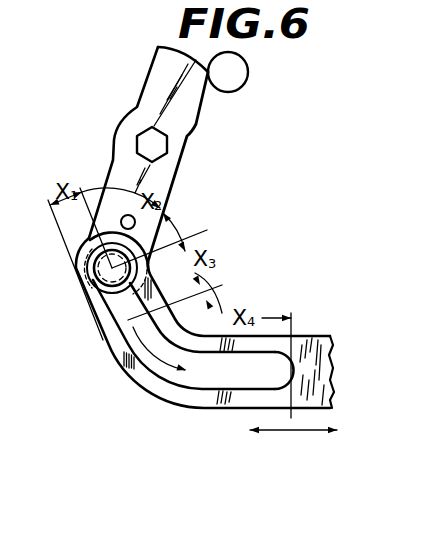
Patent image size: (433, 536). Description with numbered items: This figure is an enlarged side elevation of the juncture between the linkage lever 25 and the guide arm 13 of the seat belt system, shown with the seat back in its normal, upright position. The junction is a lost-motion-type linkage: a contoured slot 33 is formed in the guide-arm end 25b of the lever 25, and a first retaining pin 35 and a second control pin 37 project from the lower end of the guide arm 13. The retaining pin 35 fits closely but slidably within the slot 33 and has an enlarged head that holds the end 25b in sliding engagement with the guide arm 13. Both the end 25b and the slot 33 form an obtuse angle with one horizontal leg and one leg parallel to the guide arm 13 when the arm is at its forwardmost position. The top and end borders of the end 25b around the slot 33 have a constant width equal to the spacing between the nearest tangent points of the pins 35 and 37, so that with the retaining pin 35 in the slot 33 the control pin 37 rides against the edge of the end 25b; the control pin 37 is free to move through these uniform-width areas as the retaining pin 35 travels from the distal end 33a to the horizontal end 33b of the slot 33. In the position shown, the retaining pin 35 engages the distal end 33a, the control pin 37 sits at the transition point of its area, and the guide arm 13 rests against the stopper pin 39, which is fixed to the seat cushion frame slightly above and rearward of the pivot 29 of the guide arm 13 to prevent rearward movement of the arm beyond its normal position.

The guide arm 13 is at (138, 94).
The linkage lever 25 is at (215, 410).
The guide-arm end of the lever 25b is at (268, 350).
The pivot of the guide arm 29 is at (155, 141).
The contoured slot 33 is at (173, 373).
The distal end of the slot 33a is at (90, 282).
The horizontal end of the slot 33b is at (285, 373).
The retaining pin 35 is at (86, 253).
The control pin 37 is at (135, 220).
The stopper pin 39 is at (235, 76).